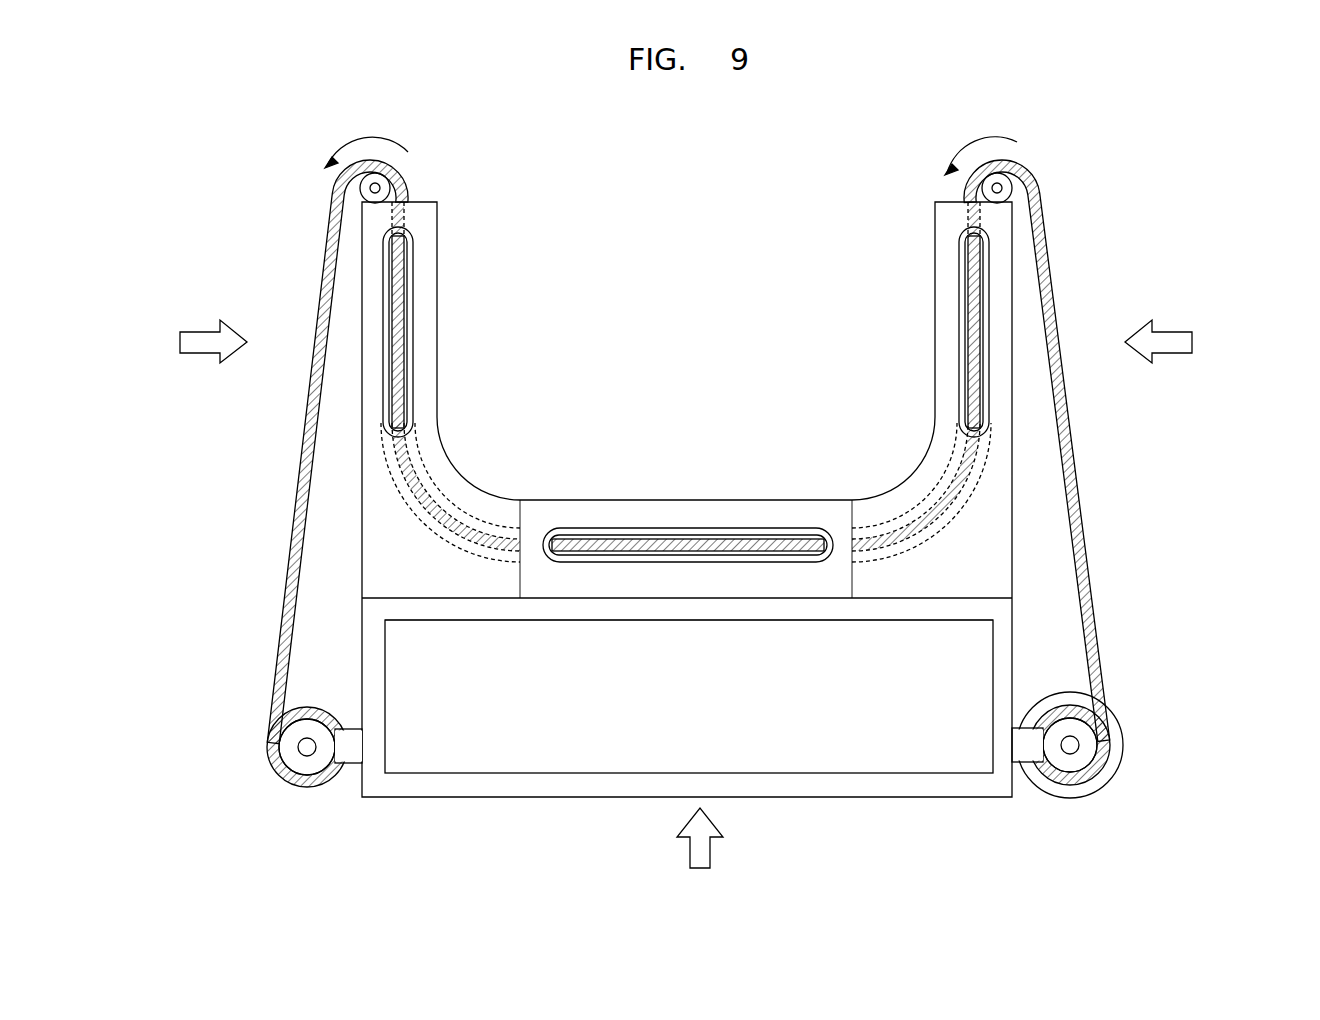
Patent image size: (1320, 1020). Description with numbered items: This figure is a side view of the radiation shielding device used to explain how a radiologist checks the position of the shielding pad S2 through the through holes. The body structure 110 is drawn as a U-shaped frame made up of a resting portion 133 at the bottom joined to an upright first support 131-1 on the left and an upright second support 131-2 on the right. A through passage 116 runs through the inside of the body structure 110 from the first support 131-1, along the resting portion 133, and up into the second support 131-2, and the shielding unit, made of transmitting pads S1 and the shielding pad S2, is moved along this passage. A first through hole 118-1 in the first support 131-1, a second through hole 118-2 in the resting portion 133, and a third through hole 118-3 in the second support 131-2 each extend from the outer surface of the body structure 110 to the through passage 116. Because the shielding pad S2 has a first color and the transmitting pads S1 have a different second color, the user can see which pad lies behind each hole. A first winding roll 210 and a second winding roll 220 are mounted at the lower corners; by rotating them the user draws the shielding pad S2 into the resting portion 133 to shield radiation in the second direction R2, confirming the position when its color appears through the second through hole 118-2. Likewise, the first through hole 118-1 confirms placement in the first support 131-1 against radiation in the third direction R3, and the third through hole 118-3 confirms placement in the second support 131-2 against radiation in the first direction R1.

The body structure 110 is at (1228, 690).
The first support 131-1 is at (430, 575).
The second support 131-2 is at (928, 563).
The resting portion 133 is at (637, 575).
The through passage 116 is at (630, 535).
The first through hole 118-1 is at (415, 352).
The second through hole 118-2 is at (740, 528).
The third through hole 118-3 is at (957, 352).
The transmitting pads S1 is at (405, 302).
The shielding pad S2 is at (793, 540).
The first winding roll 210 is at (1068, 770).
The second winding roll 220 is at (304, 787).
The first direction R1 is at (1179, 341).
The second direction R2 is at (700, 857).
The third direction R3 is at (196, 341).